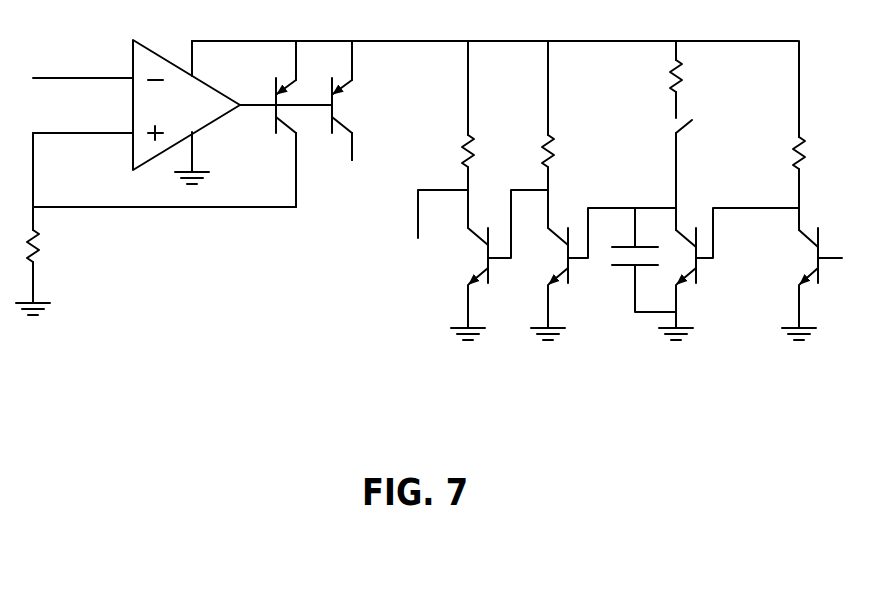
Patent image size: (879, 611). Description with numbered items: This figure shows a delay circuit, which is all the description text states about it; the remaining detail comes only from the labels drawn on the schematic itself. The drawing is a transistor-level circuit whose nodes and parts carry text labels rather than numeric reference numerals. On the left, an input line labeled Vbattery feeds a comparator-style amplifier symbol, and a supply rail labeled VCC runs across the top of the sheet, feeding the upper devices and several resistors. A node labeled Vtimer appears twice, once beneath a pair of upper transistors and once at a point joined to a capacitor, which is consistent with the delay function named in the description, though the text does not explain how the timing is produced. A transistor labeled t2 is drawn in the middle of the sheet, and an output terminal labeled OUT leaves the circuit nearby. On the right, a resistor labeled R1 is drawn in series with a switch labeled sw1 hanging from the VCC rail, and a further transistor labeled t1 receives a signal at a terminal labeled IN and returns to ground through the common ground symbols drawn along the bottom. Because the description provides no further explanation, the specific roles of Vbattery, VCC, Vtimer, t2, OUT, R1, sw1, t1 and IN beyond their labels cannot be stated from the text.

The battery voltage input Vbattery is at (80, 62).
The supply voltage rail VCC is at (495, 26).
The timer voltage node Vtimer is at (496, 181).
The transistor t2 is at (588, 190).
The output terminal OUT is at (430, 231).
The resistor R1 is at (695, 79).
The switch sw1 is at (711, 169).
The transistor t1 is at (804, 190).
The input terminal IN is at (844, 259).